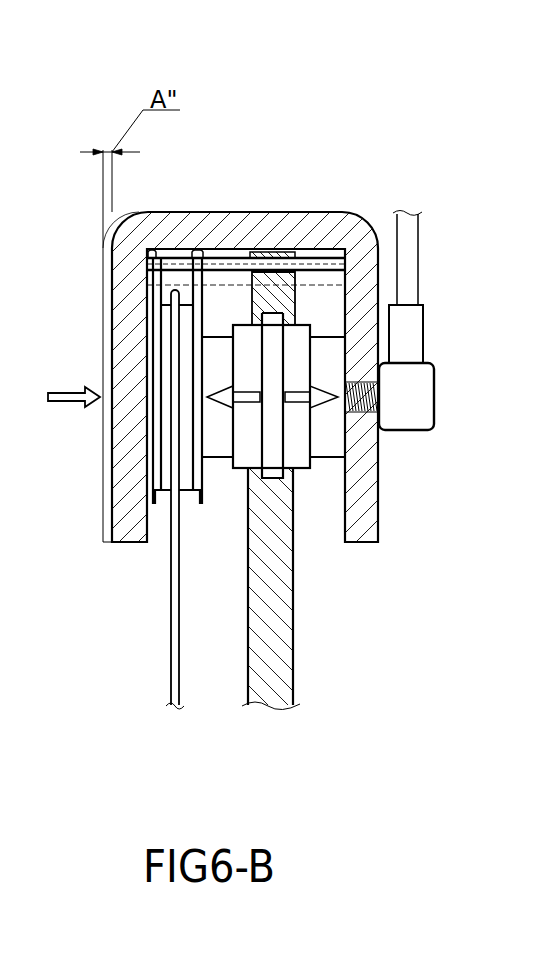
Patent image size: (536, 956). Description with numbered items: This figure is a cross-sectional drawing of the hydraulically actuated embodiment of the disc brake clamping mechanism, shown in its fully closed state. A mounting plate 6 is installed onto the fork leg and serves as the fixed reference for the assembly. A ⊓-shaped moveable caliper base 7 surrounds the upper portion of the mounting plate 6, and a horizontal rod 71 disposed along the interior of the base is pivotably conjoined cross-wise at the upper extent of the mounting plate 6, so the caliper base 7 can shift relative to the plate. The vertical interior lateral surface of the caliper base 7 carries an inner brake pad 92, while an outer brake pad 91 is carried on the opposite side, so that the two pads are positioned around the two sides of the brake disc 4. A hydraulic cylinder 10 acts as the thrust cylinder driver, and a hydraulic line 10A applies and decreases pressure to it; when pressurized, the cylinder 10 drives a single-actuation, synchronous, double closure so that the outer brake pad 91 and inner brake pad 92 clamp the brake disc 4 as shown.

The moveable caliper base 7 is at (62, 535).
The horizontal rod 71 is at (407, 133).
The inner brake pad 92 is at (137, 607).
The outer brake pad 91 is at (240, 593).
The brake disc 4 is at (117, 684).
The hydraulic cylinder 10 is at (375, 597).
The mounting plate 6 is at (365, 695).
The hydraulic line 10A is at (405, 353).